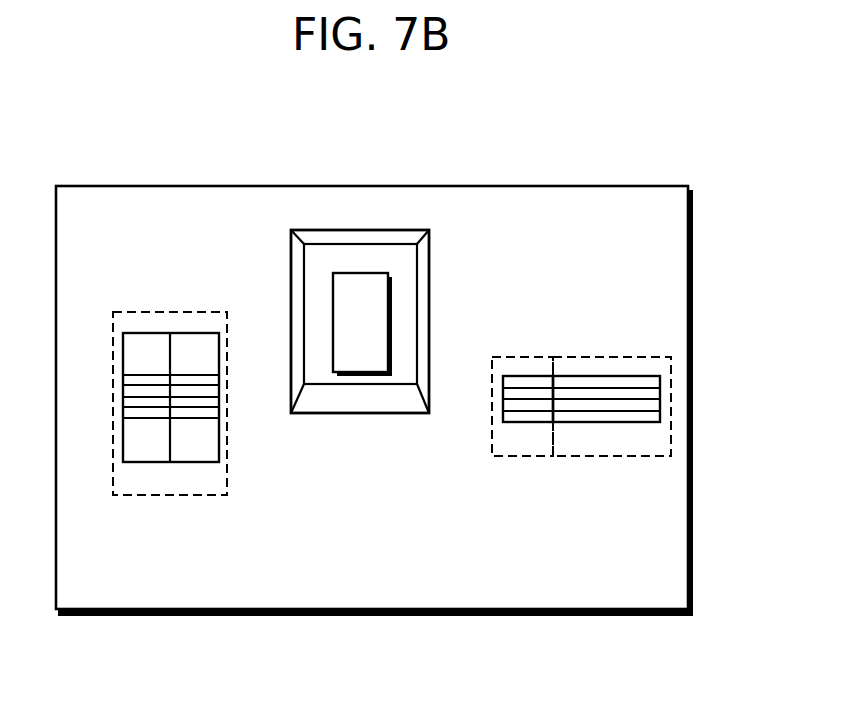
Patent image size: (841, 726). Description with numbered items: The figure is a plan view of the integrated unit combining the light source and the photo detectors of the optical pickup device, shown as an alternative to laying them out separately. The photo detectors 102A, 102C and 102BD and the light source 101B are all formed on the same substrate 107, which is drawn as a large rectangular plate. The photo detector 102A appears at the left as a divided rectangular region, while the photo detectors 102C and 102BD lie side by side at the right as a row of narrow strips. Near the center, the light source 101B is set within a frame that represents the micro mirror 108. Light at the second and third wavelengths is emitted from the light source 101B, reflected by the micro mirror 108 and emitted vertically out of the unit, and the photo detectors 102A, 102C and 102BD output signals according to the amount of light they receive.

The substrate 107 is at (629, 187).
The micro mirror 108 is at (374, 400).
The light source 101B is at (362, 312).
The photo detector 102A is at (180, 483).
The photo detector 102C is at (513, 444).
The photo detector 102BD is at (620, 440).